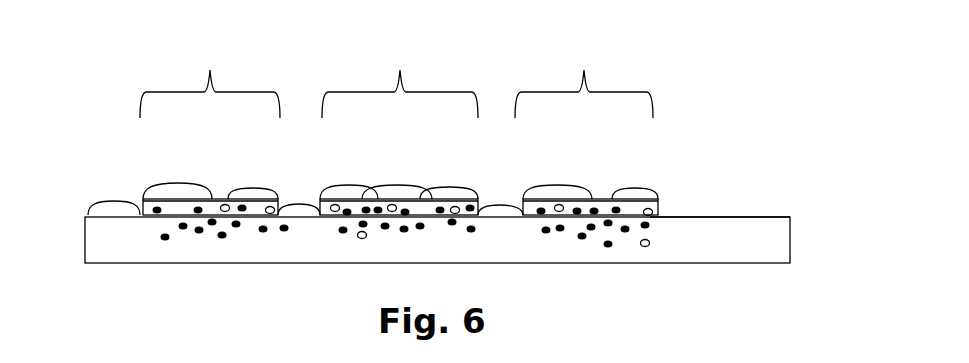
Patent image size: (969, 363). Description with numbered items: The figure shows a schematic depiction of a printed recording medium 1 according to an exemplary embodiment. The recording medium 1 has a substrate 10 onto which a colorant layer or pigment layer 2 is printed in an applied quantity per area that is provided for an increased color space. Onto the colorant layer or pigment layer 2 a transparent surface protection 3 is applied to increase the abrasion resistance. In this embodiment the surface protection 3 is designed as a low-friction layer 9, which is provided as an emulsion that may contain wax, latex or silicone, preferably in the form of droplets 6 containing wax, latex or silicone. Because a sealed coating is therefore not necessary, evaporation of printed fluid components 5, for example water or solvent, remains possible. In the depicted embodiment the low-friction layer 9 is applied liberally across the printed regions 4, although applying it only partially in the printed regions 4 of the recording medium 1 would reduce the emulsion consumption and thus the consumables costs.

The printed recording medium 1 is at (793, 236).
The colorant layer or pigment layer 2 is at (218, 200).
The surface protection 3 is at (115, 176).
The low-friction layer 9 is at (133, 183).
The printed regions 4 is at (356, 117).
The printed fluid components 5 is at (441, 210).
The droplets 6 is at (632, 196).
The substrate 10 is at (715, 248).